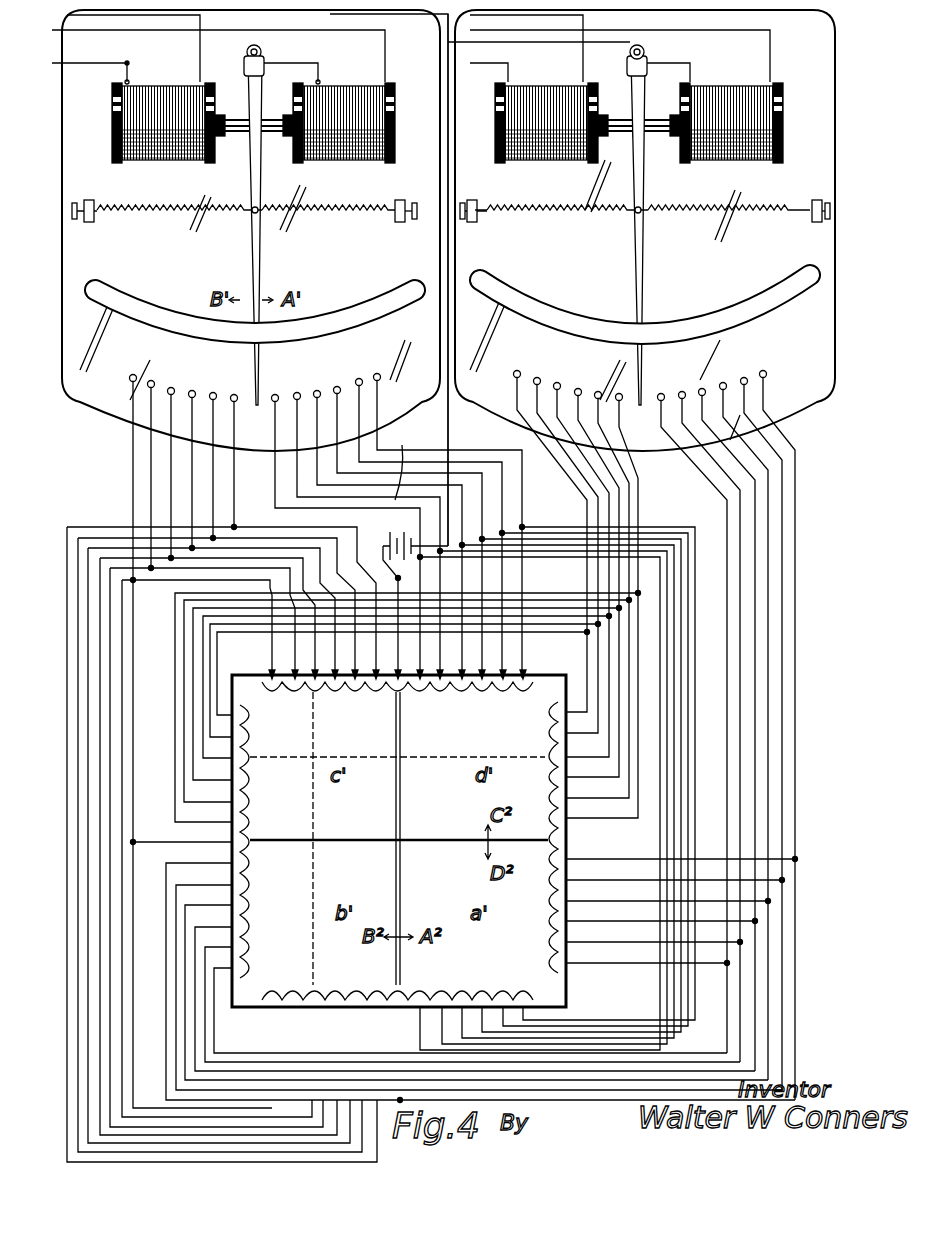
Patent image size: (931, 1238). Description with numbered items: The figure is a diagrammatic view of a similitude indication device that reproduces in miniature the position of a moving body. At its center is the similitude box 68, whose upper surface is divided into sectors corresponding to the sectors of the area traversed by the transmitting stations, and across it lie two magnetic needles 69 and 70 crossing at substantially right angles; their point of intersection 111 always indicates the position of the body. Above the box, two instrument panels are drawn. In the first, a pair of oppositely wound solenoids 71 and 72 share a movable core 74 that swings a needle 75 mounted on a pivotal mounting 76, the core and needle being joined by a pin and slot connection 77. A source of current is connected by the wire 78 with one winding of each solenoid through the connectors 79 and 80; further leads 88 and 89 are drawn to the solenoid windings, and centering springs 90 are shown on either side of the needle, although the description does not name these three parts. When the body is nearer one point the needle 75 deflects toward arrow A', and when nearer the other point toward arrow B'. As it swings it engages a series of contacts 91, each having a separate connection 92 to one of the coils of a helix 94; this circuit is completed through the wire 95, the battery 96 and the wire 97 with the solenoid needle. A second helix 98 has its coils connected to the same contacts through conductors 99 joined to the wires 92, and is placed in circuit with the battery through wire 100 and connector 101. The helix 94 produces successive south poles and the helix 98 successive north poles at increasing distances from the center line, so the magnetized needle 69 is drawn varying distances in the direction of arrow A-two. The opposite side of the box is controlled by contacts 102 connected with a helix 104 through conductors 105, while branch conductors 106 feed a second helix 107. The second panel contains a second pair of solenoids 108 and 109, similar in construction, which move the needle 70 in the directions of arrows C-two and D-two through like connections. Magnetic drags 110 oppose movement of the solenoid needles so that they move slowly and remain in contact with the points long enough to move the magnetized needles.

The similitude box 68 is at (548, 676).
The magnetic needle 69 is at (401, 748).
The magnetic needle 70 is at (420, 842).
The solenoid 71 is at (350, 164).
The solenoid 72 is at (185, 164).
The movable core 74 is at (236, 128).
The needle 75 is at (260, 270).
The pivotal mounting 76 is at (262, 53).
The pin and slot connection 77 is at (262, 110).
The wire 78 is at (100, 66).
The connector 79 is at (130, 80).
The connector 80 is at (312, 84).
The conductor 88 is at (328, 31).
The conductor 89 is at (180, 18).
The centering spring 90 is at (175, 212).
The contacts 91 is at (375, 374).
The connection 92 is at (410, 459).
The helix 94 is at (482, 706).
The wire 95 is at (400, 580).
The battery 96 is at (392, 534).
The wire 97 is at (449, 433).
The second helix 98 is at (500, 990).
The conductors 99 is at (684, 718).
The wire 100 is at (150, 712).
The connector 101 is at (410, 1100).
The contacts 102 is at (236, 394).
The helix 104 is at (355, 706).
The conductors 105 is at (235, 492).
The branch conductors 106 is at (212, 1162).
The second helix 107 is at (320, 968).
The solenoid 108 is at (735, 182).
The solenoid 109 is at (550, 182).
The magnetic drag 110 is at (130, 318).
The point of intersection 111 is at (322, 742).